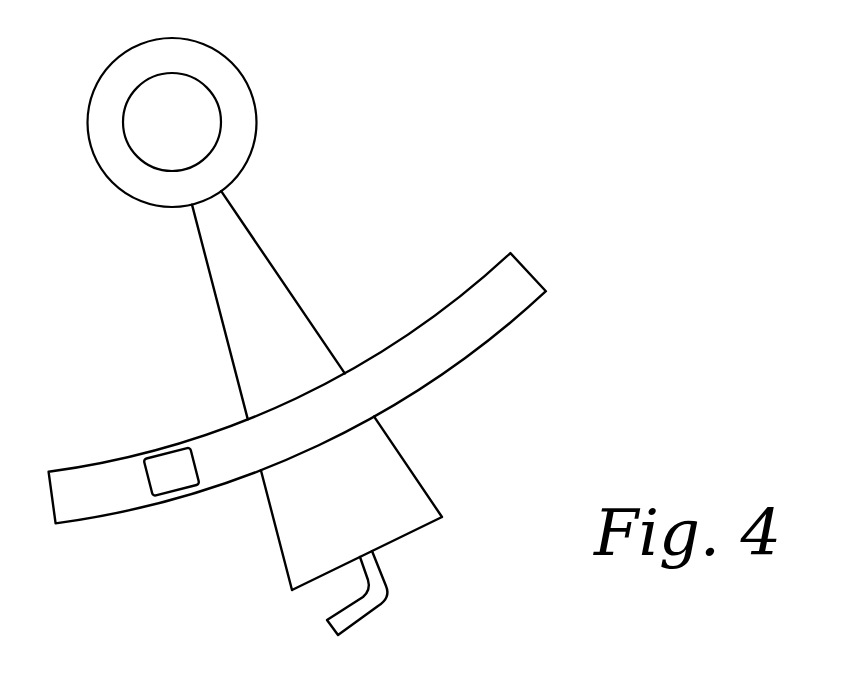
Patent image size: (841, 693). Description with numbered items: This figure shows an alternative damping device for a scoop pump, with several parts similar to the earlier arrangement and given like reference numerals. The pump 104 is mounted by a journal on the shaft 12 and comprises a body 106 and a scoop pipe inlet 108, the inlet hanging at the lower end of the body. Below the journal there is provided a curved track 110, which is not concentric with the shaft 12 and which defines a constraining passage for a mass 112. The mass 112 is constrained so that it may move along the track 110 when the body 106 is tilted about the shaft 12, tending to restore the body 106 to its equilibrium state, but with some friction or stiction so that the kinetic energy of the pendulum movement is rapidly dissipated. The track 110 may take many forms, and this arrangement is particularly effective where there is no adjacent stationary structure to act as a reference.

The shaft 12 is at (200, 133).
The pump 104 is at (280, 374).
The body 106 is at (222, 285).
The scoop pipe inlet 108 is at (377, 607).
The curved track 110 is at (112, 487).
The mass 112 is at (158, 460).